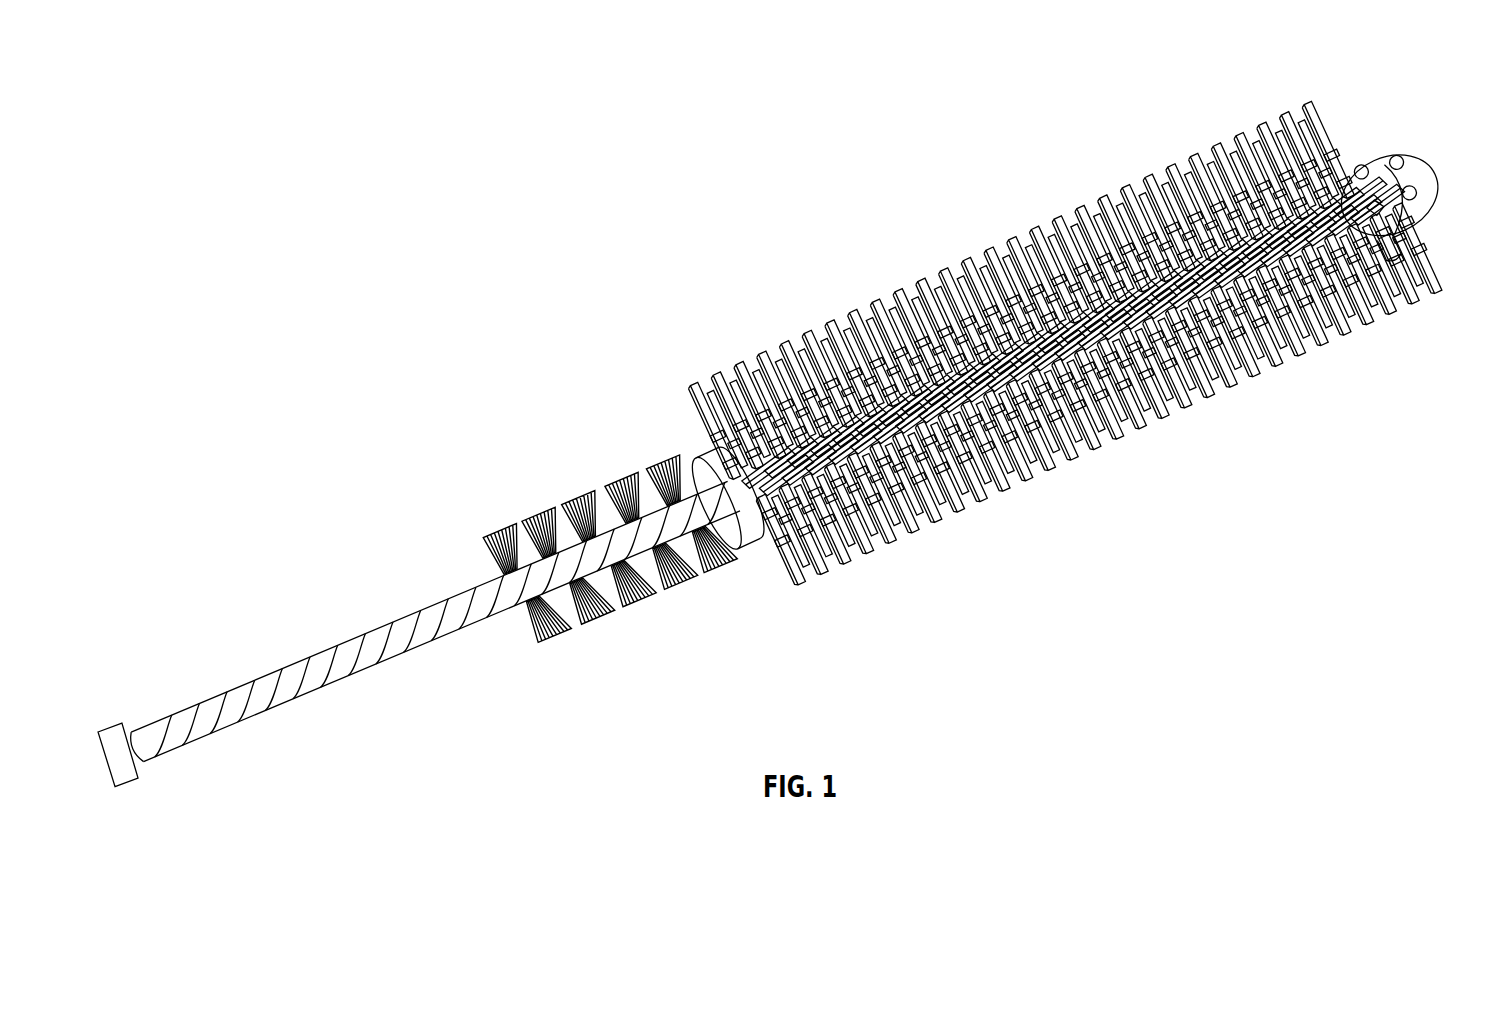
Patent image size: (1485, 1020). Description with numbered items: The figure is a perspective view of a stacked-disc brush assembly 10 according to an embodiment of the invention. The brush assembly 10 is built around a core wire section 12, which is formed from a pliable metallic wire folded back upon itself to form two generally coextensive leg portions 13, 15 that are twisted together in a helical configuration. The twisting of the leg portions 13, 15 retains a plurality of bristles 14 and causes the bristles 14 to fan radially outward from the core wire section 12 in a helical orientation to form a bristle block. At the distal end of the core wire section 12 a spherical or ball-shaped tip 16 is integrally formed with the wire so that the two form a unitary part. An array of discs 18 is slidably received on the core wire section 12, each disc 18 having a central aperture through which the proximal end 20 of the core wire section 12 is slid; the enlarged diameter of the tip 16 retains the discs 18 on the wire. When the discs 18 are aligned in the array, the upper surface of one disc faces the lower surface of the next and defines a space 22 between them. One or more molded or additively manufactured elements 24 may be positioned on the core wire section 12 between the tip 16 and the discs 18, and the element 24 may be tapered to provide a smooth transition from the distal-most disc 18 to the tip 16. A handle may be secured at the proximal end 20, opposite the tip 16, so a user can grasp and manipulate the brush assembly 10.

The brush assembly 10 is at (955, 108).
The core wire section 12 is at (375, 657).
The leg portion 13 is at (313, 647).
The bristles 14 is at (550, 525).
The leg portion 15 is at (280, 697).
The spherical tip 16 is at (1420, 160).
The discs 18 is at (1198, 157).
The proximal end 20 is at (202, 668).
The space 22 is at (924, 287).
The molded or additively manufactured element 24 is at (1362, 165).